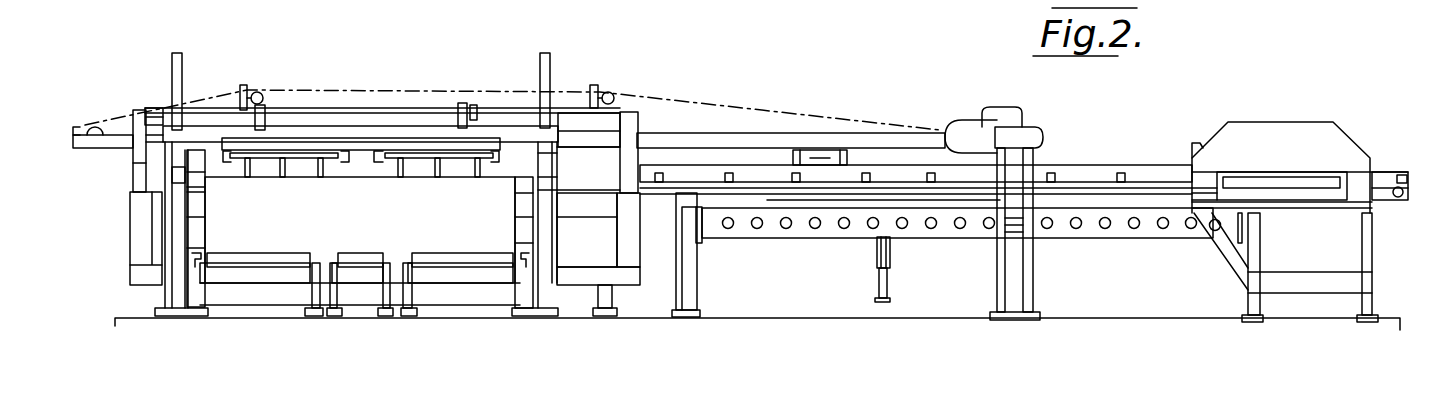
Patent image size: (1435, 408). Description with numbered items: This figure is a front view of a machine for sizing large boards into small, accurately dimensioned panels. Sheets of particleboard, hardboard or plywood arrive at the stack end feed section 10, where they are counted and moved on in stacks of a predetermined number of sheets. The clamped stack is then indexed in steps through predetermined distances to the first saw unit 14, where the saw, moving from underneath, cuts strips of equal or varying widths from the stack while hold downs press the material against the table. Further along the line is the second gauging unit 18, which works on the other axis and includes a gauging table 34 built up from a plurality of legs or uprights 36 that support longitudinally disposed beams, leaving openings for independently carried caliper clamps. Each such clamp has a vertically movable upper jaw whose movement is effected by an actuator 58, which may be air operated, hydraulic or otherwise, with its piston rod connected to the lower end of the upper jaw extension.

The stack end feed section 10 is at (403, 90).
The first saw unit 14 is at (633, 282).
The second gauging unit 18 is at (879, 116).
The gauging table 34 is at (840, 238).
The legs or uprights 36 is at (696, 285).
The actuator 58 is at (884, 288).